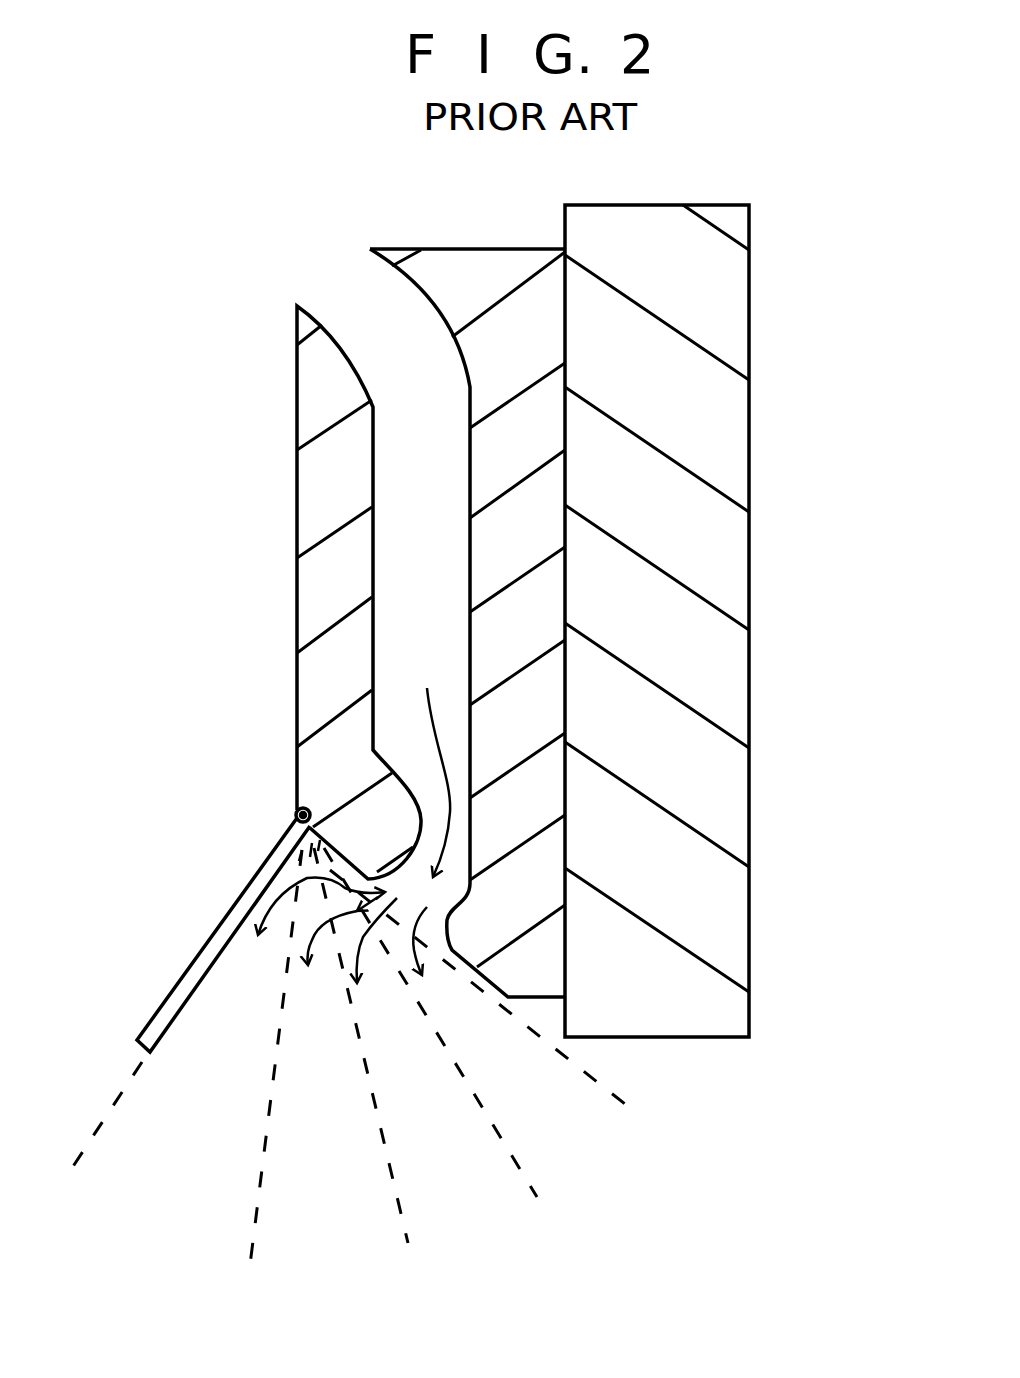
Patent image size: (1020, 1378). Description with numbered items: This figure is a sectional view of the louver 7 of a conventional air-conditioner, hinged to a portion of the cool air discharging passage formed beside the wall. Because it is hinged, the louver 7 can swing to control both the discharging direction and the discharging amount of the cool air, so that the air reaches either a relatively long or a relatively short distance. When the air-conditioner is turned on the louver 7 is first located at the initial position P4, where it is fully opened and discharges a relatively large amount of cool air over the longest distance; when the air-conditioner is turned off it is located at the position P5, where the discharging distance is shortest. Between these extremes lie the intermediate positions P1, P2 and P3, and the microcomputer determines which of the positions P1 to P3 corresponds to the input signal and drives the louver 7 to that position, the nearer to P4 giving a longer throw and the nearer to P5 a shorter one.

The louver 7 is at (233, 915).
The element wall is at (742, 427).
The louver position P1 is at (268, 1082).
The louver position P2 is at (380, 1068).
The louver position P3 is at (453, 1042).
The initial position P4 is at (93, 1137).
The closed position P5 is at (504, 1007).